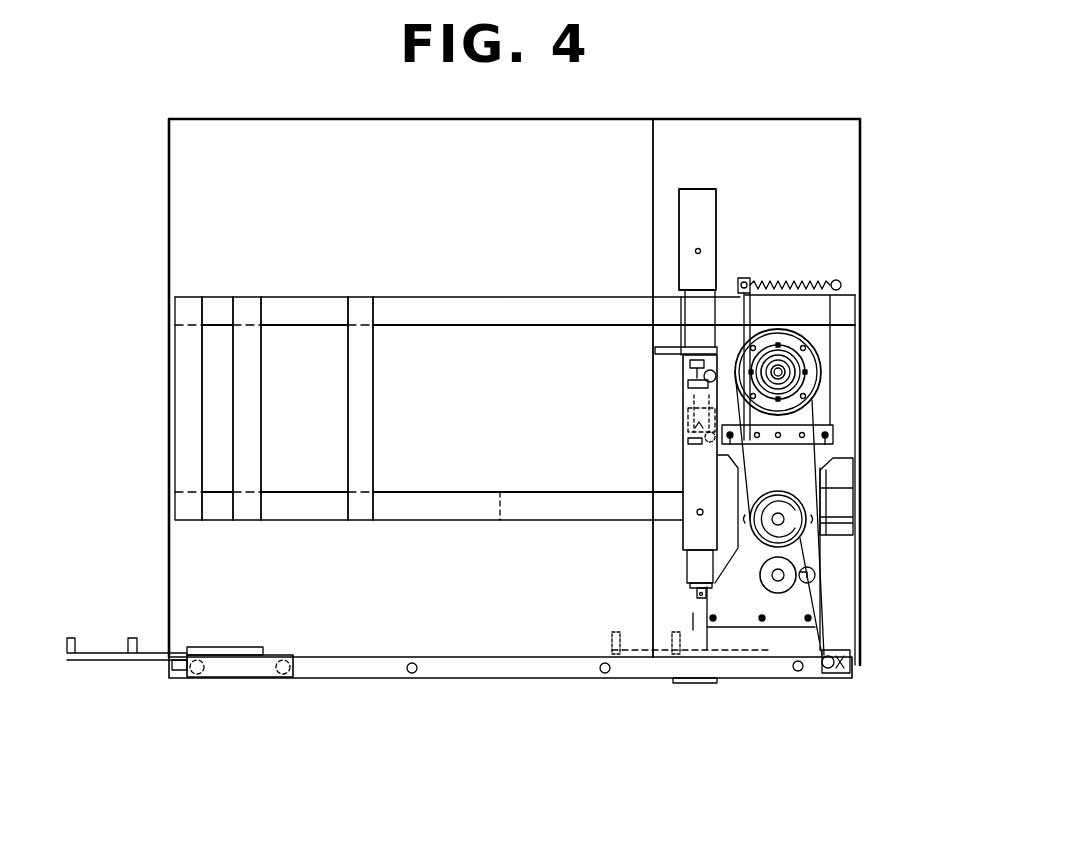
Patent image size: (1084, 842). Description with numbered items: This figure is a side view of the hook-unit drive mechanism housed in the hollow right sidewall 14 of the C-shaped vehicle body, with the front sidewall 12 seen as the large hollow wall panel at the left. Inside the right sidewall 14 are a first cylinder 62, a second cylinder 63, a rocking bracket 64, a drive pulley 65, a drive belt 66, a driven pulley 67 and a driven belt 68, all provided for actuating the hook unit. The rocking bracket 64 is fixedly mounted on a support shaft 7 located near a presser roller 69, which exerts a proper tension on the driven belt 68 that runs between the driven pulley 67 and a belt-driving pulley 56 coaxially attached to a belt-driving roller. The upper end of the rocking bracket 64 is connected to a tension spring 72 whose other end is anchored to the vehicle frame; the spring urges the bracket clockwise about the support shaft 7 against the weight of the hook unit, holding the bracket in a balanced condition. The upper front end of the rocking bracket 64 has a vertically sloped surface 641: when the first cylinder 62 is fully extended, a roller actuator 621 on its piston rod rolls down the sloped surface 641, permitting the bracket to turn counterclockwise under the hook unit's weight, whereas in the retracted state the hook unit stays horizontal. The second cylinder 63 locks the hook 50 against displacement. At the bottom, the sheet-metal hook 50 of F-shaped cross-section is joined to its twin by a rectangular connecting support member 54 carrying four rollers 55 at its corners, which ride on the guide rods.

The sidewall 12 is at (445, 222).
The right sidewall 14 is at (862, 200).
The hook 50 is at (105, 662).
The connecting support member 54 is at (225, 648).
The rollers 55 is at (192, 676).
The belt-driving pulley 56 is at (825, 680).
The first cylinder 62 is at (698, 216).
The roller actuator 621 is at (697, 368).
The second cylinder 63 is at (693, 535).
The rocking bracket 64 is at (810, 502).
The sloped surface 641 is at (713, 398).
The drive pulley 65 is at (808, 378).
The drive belt 66 is at (823, 458).
The driven pulley 67 is at (790, 524).
The driven belt 68 is at (827, 610).
The presser roller 69 is at (768, 582).
The support shaft 7 is at (813, 573).
The tension spring 72 is at (778, 283).